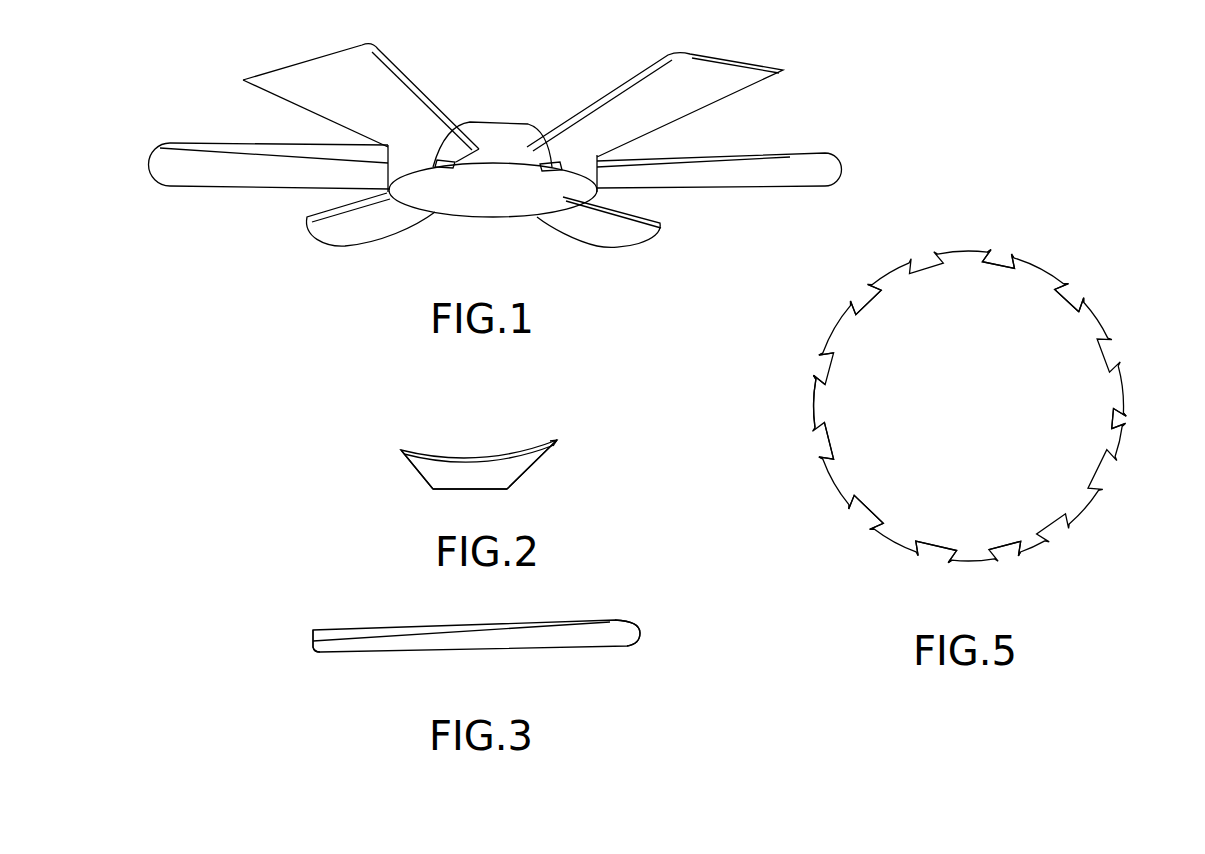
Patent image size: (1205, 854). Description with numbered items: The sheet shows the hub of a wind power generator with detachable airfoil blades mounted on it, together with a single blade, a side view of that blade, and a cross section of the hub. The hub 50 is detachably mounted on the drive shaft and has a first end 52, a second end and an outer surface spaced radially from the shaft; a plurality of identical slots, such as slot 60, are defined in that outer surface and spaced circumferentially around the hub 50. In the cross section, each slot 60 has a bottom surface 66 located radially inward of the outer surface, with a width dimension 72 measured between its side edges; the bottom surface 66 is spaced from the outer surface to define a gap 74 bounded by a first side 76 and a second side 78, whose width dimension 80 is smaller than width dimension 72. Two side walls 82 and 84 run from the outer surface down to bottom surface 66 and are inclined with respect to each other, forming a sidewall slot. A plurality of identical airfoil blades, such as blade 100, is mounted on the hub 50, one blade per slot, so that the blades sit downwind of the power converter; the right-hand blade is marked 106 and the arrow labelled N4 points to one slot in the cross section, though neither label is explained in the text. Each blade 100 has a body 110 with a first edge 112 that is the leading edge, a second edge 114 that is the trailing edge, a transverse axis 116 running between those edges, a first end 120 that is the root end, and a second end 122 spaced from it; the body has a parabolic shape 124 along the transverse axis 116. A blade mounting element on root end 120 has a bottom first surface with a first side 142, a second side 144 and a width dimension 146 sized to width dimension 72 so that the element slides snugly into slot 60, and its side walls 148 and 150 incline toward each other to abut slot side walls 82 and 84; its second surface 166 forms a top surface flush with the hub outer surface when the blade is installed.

In FIG. 1, the hub 50 is at (632, 217).
In FIG. 5, the hub 50 is at (1062, 392).
In FIG. 1, the first end of the hub 52 is at (392, 197).
In FIG. 5, the slot 60 is at (1000, 266).
In FIG. 5, the bottom surface 66 is at (1066, 290).
In FIG. 5, the width dimension 72 is at (883, 324).
In FIG. 5, the gap 74 is at (1066, 290).
In FIG. 5, the first side 76 is at (826, 355).
In FIG. 5, the second side 78 is at (813, 376).
In FIG. 5, the width dimension 80 is at (866, 517).
In FIG. 5, the side wall 82 is at (820, 392).
In FIG. 5, the side wall 84 is at (828, 453).
In FIG. 1, the airfoil blade 100 is at (215, 180).
In FIG. 2, the airfoil blade 100 is at (418, 478).
In FIG. 3, the airfoil blade 100 is at (542, 619).
In FIG. 1, the blade 106 is at (790, 150).
In FIG. 1, the body 110 is at (350, 230).
In FIG. 2, the body 110 is at (482, 482).
In FIG. 3, the body 110 is at (490, 653).
In FIG. 2, the first edge 112 is at (546, 459).
In FIG. 2, the second edge 114 is at (408, 466).
In FIG. 2, the transverse axis 116 is at (511, 473).
In FIG. 3, the first end 120 is at (340, 655).
In FIG. 3, the second end 122 is at (647, 632).
In FIG. 2, the parabolic shape 124 is at (485, 445).
In FIG. 1, the first side 142 is at (462, 153).
In FIG. 1, the second side 144 is at (428, 168).
In FIG. 1, the width dimension 146 is at (443, 172).
In FIG. 5, the side wall 148 is at (1115, 422).
In FIG. 5, the side wall 150 is at (1120, 442).
In FIG. 1, the second surface 166 is at (512, 170).
In FIG. 5, the notch N4 is at (936, 551).